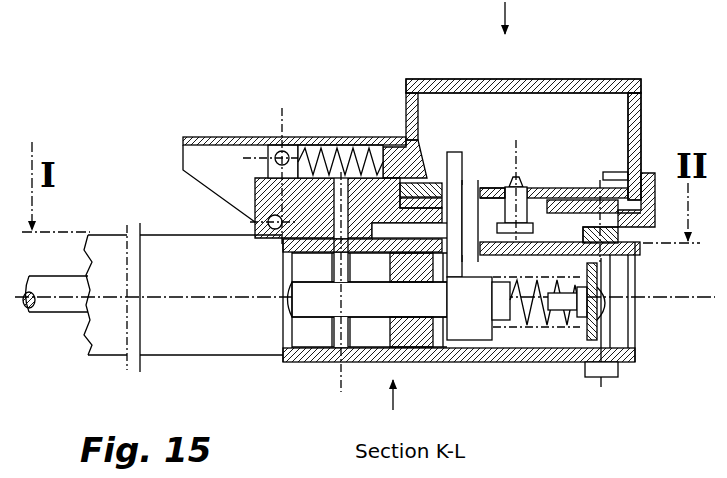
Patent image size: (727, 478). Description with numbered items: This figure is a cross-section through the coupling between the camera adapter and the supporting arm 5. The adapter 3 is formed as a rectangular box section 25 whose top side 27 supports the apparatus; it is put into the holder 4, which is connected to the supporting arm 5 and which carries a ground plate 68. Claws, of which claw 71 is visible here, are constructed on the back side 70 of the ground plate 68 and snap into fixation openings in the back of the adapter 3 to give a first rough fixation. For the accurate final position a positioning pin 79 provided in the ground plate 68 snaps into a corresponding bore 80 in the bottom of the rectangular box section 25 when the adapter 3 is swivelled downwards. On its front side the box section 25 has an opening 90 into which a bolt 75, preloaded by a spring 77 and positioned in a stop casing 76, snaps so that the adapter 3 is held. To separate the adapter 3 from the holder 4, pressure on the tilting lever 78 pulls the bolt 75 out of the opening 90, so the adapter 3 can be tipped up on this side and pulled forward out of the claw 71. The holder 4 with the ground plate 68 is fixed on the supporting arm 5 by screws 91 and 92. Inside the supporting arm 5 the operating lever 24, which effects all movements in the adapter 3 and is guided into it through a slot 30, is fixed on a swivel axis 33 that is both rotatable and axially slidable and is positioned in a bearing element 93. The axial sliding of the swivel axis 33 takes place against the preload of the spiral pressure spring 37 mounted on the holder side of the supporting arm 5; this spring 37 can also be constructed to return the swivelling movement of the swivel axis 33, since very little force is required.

The adapter 3 is at (567, 108).
The holder 4 is at (262, 215).
The supporting arm 5 is at (372, 358).
The operating lever 24 is at (468, 313).
The rectangular box section 25 is at (632, 113).
The top side 27 is at (542, 80).
The slot 30 is at (468, 193).
The swivel axis 33 is at (315, 307).
The spring 37 is at (520, 323).
The ground plate 68 is at (651, 223).
The back side 70 is at (643, 242).
The claw 71 is at (627, 193).
The bolt 75 is at (383, 145).
The stop casing 76 is at (337, 148).
The spring 77 is at (318, 152).
The tilting lever 78 is at (182, 150).
The positioning pin 79 is at (520, 183).
The bore 80 is at (507, 187).
The opening 90 is at (413, 145).
The screw 91 is at (337, 338).
The screw 92 is at (610, 370).
The bearing element 93 is at (410, 322).